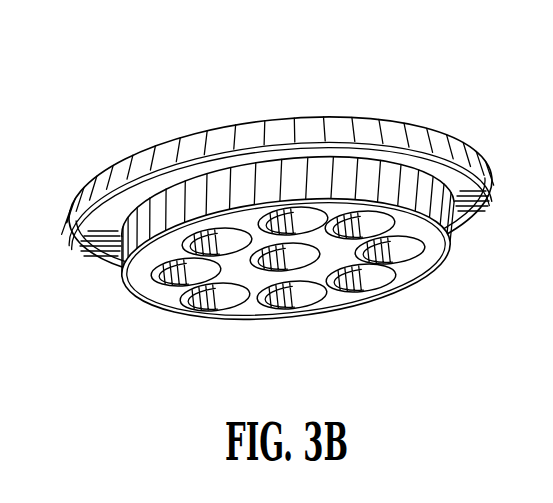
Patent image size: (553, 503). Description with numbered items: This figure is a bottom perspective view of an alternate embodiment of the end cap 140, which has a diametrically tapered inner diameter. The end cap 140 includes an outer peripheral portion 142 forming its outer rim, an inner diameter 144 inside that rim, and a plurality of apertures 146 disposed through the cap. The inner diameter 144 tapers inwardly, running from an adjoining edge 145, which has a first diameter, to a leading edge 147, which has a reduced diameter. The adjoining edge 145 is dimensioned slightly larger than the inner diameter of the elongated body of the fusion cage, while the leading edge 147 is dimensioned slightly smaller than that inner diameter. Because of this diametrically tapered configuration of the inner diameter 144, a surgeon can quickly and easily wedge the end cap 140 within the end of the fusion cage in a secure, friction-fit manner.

The end cap 140 is at (292, 175).
The outer peripheral portion 142 is at (486, 172).
The inner diameter 144 is at (113, 214).
The adjoining edge 145 is at (126, 222).
The apertures 146 is at (356, 222).
The leading edge 147 is at (193, 226).